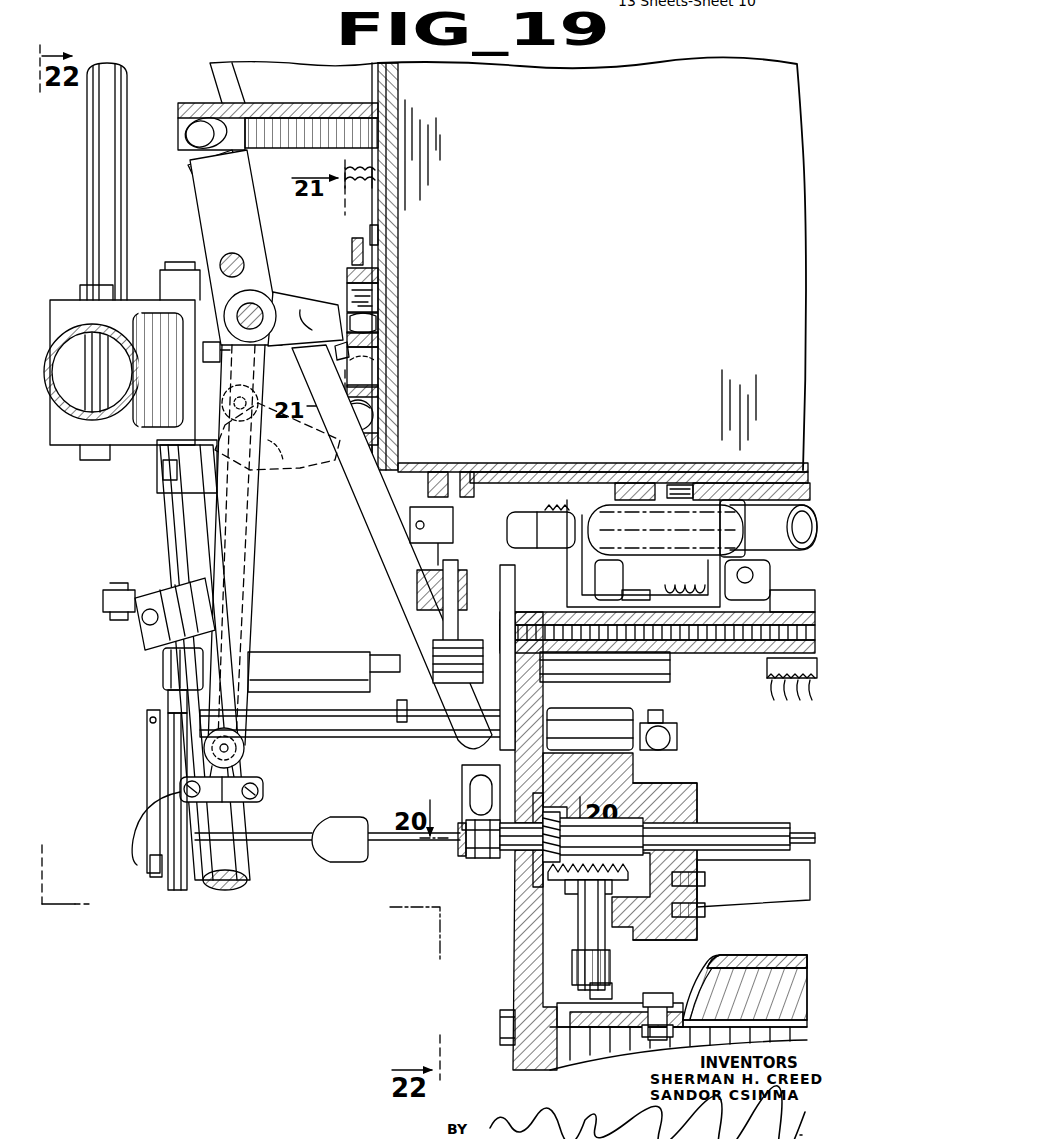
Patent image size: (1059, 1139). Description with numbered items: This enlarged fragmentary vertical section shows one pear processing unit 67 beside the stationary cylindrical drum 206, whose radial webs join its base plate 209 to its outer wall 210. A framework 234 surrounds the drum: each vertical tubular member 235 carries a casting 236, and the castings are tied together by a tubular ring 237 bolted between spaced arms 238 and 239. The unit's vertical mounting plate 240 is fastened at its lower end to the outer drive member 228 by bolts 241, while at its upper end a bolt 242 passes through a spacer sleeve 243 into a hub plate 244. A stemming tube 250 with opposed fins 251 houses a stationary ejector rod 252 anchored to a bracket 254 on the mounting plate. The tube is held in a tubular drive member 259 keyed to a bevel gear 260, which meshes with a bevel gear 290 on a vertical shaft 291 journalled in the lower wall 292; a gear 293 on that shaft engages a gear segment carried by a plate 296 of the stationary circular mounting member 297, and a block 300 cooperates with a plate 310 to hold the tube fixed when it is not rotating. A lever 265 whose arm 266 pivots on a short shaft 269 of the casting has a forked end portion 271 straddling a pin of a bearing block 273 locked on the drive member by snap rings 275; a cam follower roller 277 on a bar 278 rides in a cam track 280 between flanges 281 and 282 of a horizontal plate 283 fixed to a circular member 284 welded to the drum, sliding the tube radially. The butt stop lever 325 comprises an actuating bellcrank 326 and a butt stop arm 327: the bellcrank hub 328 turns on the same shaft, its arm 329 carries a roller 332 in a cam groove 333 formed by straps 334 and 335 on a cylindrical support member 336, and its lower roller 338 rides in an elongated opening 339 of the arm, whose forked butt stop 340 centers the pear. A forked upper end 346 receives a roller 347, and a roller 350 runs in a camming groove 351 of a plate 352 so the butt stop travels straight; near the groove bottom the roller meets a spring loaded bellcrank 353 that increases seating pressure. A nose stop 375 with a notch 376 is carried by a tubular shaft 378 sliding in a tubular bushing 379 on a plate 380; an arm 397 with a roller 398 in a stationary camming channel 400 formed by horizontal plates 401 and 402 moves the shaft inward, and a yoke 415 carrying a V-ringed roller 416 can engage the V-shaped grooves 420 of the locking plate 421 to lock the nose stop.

The pear processing unit 67 is at (143, 683).
The cylindrical drum 206 is at (502, 450).
The base plate 209 is at (587, 463).
The outer wall 210 is at (390, 347).
The outer drive member 228 is at (522, 1062).
The framework 234 is at (155, 522).
The vertical tubular member 235 is at (185, 555).
The casting 236 is at (152, 497).
The tubular ring 237 is at (73, 412).
The arm of casting 238 is at (72, 302).
The arm of casting 239 is at (120, 440).
The mounting plate 240 is at (527, 975).
The bolts 241 is at (500, 1030).
The bolt 242 is at (620, 640).
The spacer sleeve 243 is at (575, 650).
The hub plate 244 is at (728, 648).
The stemming tube 250 is at (295, 847).
The fins 251 is at (337, 823).
The stationary ejector rod 252 is at (810, 810).
The bracket 254 is at (790, 894).
The tubular drive member 259 is at (735, 805).
The bevel gear 260 is at (550, 820).
The lever 265 is at (358, 598).
The lever arm 266 is at (215, 228).
The short shaft 269 is at (236, 310).
The forked end portion 271 is at (462, 800).
The bearing block 273 is at (478, 858).
The snap rings 275 is at (462, 822).
The cam follower roller 277 is at (212, 147).
The bar 278 is at (210, 183).
The cam track 280 is at (180, 128).
The flange 281 is at (188, 130).
The flange 282 is at (232, 126).
The horizontal plate 283 is at (300, 110).
The circular member 284 is at (385, 92).
The bevel gear 290 is at (567, 875).
The vertical shaft 291 is at (592, 937).
The lower wall 292 is at (653, 925).
The gear 293 is at (610, 967).
The plate 296 is at (733, 968).
The stationary circular mounting member 297 is at (782, 957).
The block 300 is at (613, 992).
The plate 310 is at (640, 1012).
The butt stop lever 325 is at (258, 566).
The actuating bellcrank 326 is at (232, 553).
The butt stop arm 327 is at (235, 768).
The hub 328 is at (355, 262).
The arm 329 is at (325, 331).
The roller 332 is at (368, 327).
The cam groove 333 is at (372, 295).
The horizontal strap 334 is at (350, 275).
The horizontal strap 335 is at (368, 355).
The cylindrical support member 336 is at (372, 180).
The roller 338 is at (240, 713).
The elongated opening 339 is at (246, 679).
The forked butt stop 340 is at (136, 824).
The forked upper end 346 is at (225, 372).
The roller 347 is at (300, 392).
The roller 350 is at (222, 480).
The camming groove 351 is at (292, 442).
The plate 352 is at (343, 315).
The spring loaded bellcrank 353 is at (360, 240).
The nose stop 375 is at (157, 767).
The notch 376 is at (152, 858).
The tubular shaft 378 is at (400, 723).
The tubular bushing 379 is at (604, 731).
The plate 380 is at (504, 603).
The arm 397 is at (332, 398).
The roller 398 is at (362, 415).
The stationary camming channel 400 is at (372, 428).
The horizontal plate 401 is at (378, 392).
The horizontal plate 402 is at (368, 452).
The yoke 415 is at (665, 730).
The roller 416 is at (658, 752).
The V-shaped grooves 420 is at (791, 699).
The locking plate 421 is at (767, 670).